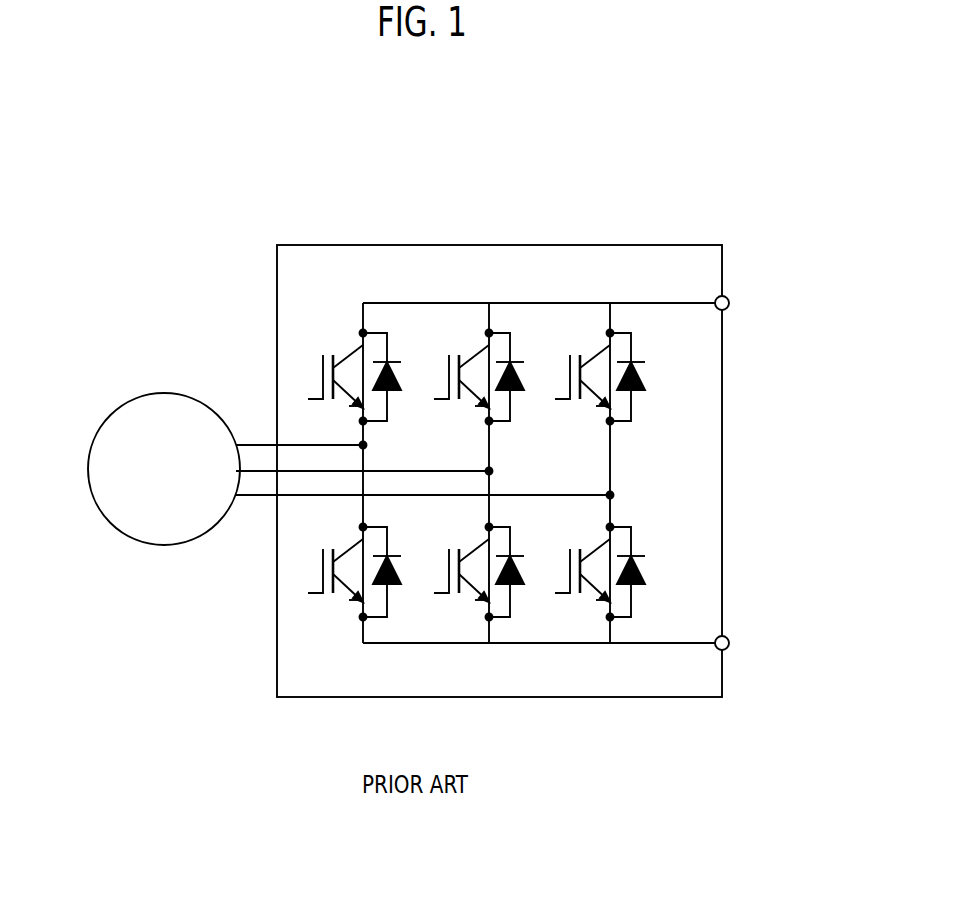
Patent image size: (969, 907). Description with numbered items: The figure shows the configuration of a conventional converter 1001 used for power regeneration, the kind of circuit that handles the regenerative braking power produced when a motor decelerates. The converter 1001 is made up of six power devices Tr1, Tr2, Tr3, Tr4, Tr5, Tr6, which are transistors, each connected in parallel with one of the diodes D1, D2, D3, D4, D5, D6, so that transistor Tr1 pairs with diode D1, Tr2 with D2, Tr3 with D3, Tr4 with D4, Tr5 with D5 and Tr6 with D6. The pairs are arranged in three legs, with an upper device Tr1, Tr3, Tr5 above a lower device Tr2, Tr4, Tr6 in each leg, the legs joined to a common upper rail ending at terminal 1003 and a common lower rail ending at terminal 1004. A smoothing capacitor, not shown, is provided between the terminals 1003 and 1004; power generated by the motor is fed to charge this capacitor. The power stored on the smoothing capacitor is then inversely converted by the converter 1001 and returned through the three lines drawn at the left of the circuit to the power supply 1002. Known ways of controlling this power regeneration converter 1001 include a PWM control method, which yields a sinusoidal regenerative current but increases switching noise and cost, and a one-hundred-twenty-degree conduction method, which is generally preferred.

The converter 1001 is at (555, 245).
The power supply 1002 is at (110, 526).
The terminal 1003 is at (729, 303).
The terminal 1004 is at (729, 643).
The power device Tr1 is at (339, 349).
The power device Tr2 is at (346, 601).
The power device Tr3 is at (465, 349).
The power device Tr4 is at (472, 601).
The power device Tr5 is at (586, 349).
The power device Tr6 is at (593, 601).
The diode D1 is at (390, 380).
The diode D2 is at (390, 575).
The diode D3 is at (514, 380).
The diode D4 is at (514, 575).
The diode D5 is at (635, 380).
The diode D6 is at (635, 575).